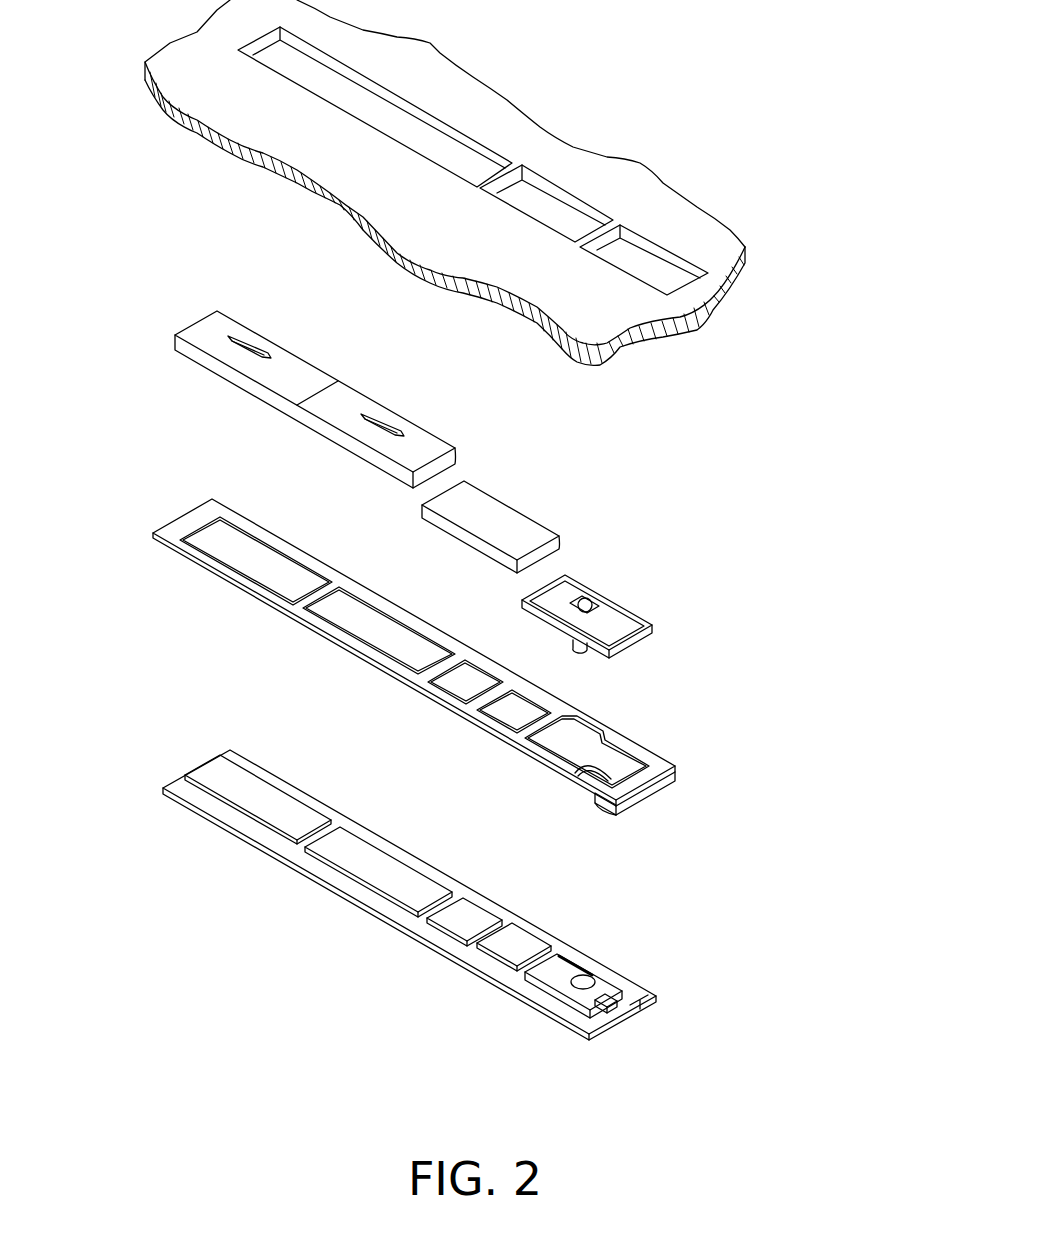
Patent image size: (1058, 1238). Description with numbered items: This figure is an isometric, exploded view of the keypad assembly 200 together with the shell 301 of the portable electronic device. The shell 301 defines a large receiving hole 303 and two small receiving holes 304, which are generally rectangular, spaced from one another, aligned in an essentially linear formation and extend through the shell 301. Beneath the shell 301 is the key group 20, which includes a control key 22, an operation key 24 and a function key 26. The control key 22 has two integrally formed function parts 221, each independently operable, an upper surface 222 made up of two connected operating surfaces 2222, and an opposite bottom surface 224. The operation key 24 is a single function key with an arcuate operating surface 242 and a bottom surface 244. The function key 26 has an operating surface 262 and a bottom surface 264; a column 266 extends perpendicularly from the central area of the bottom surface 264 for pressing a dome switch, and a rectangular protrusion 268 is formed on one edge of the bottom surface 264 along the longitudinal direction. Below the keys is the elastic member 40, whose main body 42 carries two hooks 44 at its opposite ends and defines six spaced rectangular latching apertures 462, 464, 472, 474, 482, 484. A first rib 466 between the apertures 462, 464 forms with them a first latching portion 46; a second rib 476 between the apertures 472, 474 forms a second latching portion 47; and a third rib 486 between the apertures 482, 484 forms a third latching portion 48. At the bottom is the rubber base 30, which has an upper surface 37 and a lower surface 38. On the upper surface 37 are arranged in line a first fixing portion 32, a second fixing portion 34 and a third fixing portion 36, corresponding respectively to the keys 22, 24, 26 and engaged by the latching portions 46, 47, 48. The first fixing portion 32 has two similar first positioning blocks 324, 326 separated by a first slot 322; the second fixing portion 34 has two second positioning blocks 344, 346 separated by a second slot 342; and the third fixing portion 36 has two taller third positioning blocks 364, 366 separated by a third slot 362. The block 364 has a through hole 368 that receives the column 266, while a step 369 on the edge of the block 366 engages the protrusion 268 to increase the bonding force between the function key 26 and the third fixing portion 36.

The keypad assembly 200 is at (773, 471).
The shell 301 is at (405, 182).
The large receiving hole 303 is at (387, 117).
The small receiving holes 304 is at (632, 257).
The key group 20 is at (697, 405).
The control key 22 is at (401, 398).
The operating surfaces 2222 is at (278, 363).
The upper surface 222 is at (350, 410).
The bottom surface 224 is at (237, 385).
The function parts 221 is at (340, 433).
The operation key 24 is at (508, 513).
The arcuate operating surface 242 is at (447, 505).
The bottom surface 244 is at (468, 534).
The function key 26 is at (580, 615).
The operating surface 262 is at (618, 620).
The bottom surface 264 is at (538, 620).
The column 266 is at (580, 647).
The rectangular protrusion 268 is at (597, 650).
The elastic member 40 is at (442, 687).
The main body 42 is at (202, 570).
The hooks 44 is at (663, 788).
The first latching portion 46 is at (314, 610).
The latching aperture 462 is at (260, 580).
The latching aperture 464 is at (343, 630).
The first rib 466 is at (260, 636).
The second latching portion 47 is at (450, 734).
The latching aperture 472 is at (447, 683).
The latching aperture 474 is at (512, 718).
The second rib 476 is at (475, 705).
The third latching portion 48 is at (563, 796).
The latching aperture 482 is at (558, 742).
The latching aperture 484 is at (597, 828).
The third rib 486 is at (585, 767).
The base 30 is at (434, 945).
The upper surface 37 is at (180, 790).
The lower surface 38 is at (387, 918).
The first fixing portion 32 is at (312, 846).
The first slot 322 is at (262, 878).
The first positioning block 324 is at (268, 812).
The first positioning block 326 is at (352, 860).
The second fixing portion 34 is at (440, 979).
The second slot 342 is at (512, 960).
The second positioning block 344 is at (402, 963).
The second positioning block 346 is at (548, 975).
The third fixing portion 36 is at (598, 1047).
The third slot 362 is at (587, 1007).
The third positioning block 364 is at (550, 975).
The third positioning block 366 is at (613, 1003).
The through hole 368 is at (583, 980).
The step 369 is at (664, 1020).